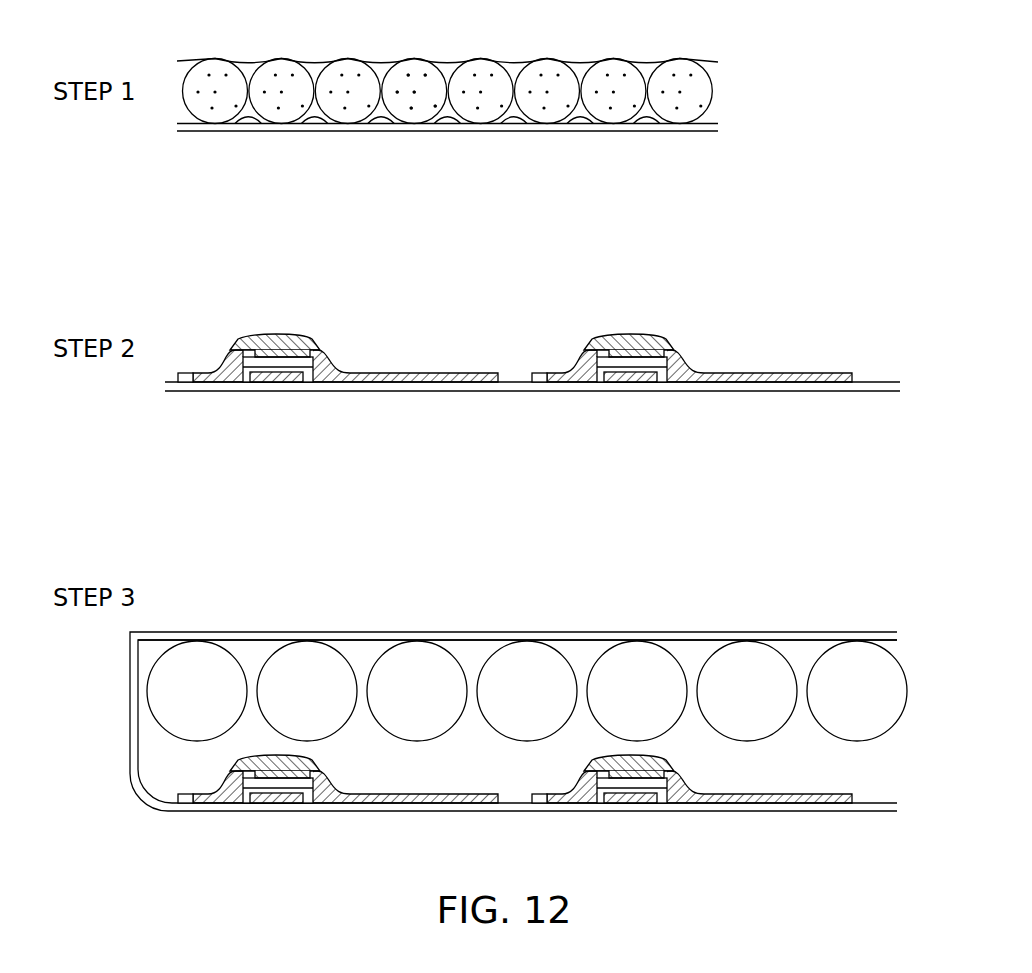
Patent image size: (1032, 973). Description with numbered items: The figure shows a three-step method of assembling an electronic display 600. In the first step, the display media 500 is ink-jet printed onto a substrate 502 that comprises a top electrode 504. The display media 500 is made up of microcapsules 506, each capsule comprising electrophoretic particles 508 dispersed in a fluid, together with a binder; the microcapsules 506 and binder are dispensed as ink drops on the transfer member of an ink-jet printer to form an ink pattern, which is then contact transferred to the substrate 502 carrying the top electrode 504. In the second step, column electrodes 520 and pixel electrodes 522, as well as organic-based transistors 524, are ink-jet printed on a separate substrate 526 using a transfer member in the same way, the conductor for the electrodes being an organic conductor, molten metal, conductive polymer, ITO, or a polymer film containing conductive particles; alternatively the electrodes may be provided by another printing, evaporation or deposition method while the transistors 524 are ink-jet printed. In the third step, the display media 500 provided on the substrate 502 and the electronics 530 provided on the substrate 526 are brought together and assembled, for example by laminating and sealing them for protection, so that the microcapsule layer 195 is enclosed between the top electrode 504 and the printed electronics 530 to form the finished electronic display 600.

The capsule layer 195 is at (588, 648).
The display media 500 is at (742, 79).
The substrate 502 is at (656, 134).
The top electrode 504 is at (713, 124).
The microcapsules 506 is at (608, 64).
The electrophoretic particles 508 is at (420, 74).
The column electrodes 520 is at (188, 384).
The pixel electrodes 522 is at (440, 384).
The organic-based transistors 524 is at (324, 334).
The substrate 526 is at (793, 393).
The electronics 530 is at (810, 334).
The electronic display 600 is at (198, 618).